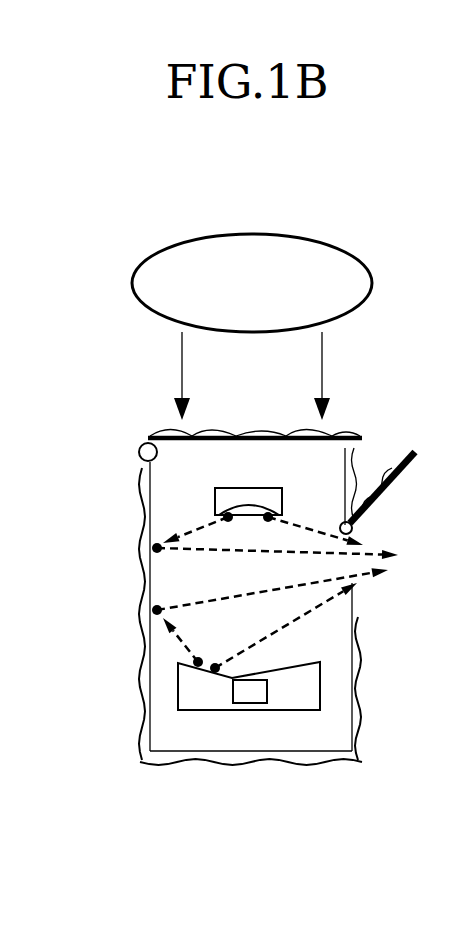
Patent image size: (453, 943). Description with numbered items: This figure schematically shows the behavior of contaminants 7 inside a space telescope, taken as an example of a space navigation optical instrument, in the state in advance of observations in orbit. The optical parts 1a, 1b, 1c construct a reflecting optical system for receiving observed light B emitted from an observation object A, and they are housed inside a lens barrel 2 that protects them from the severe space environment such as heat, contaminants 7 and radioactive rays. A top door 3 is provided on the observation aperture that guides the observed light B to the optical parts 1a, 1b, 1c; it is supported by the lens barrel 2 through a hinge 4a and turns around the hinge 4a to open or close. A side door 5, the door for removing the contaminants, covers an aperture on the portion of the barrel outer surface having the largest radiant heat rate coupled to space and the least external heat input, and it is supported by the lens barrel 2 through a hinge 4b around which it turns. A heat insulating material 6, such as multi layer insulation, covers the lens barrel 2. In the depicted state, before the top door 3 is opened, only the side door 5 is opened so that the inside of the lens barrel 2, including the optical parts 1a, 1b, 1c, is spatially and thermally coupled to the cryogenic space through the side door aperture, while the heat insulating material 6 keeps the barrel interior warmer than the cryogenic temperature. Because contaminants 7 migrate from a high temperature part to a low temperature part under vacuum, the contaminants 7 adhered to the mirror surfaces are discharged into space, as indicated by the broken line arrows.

The observation object A is at (253, 233).
The observed light B is at (324, 361).
The optical part 1a is at (320, 690).
The optical part 1b is at (285, 496).
The optical part 1c is at (250, 703).
The lens barrel 2 is at (140, 570).
The top door 3 is at (238, 435).
The hinge 4a is at (142, 446).
The hinge 4b is at (354, 532).
The side door 5 is at (398, 460).
The heat insulating material 6 is at (138, 500).
The contaminants 7 is at (155, 625).